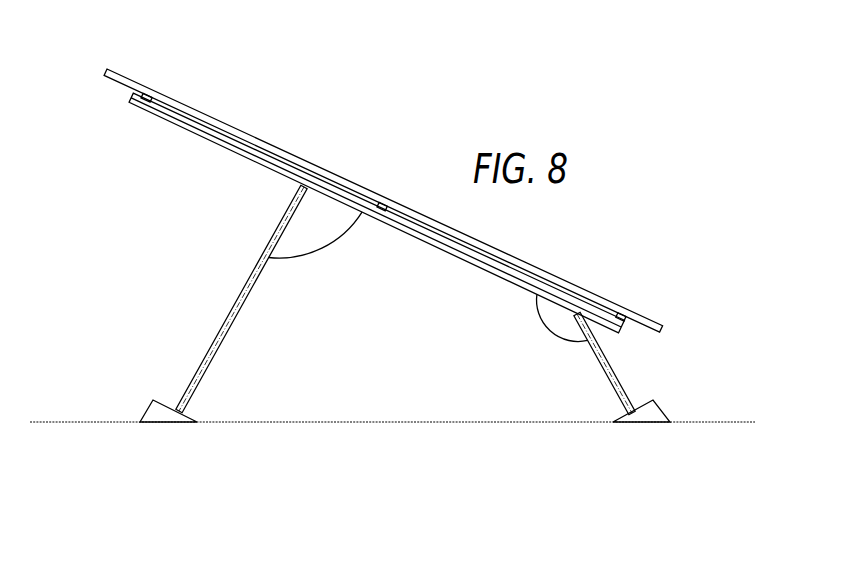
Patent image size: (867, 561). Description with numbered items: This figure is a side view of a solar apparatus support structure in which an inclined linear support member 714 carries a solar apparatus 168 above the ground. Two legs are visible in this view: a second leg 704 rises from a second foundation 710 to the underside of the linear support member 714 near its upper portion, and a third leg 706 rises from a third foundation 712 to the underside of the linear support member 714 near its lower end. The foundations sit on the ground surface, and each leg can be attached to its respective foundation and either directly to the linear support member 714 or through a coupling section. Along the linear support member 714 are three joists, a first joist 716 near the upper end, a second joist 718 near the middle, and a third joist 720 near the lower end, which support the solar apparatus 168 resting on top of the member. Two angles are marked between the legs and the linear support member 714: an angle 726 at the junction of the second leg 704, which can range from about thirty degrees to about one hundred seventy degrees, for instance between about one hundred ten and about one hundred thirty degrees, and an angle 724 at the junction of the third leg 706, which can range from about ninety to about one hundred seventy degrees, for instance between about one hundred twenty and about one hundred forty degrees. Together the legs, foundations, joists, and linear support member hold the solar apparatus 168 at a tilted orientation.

The solar apparatus 168 is at (568, 282).
The second leg 704 is at (258, 258).
The third leg 706 is at (616, 373).
The second foundation 710 is at (149, 411).
The third foundation 712 is at (655, 415).
The linear support member 714 is at (167, 121).
The first joist 716 is at (147, 95).
The second joist 718 is at (381, 206).
The third joist 720 is at (624, 317).
The angle 724 is at (537, 308).
The angle 726 is at (343, 232).